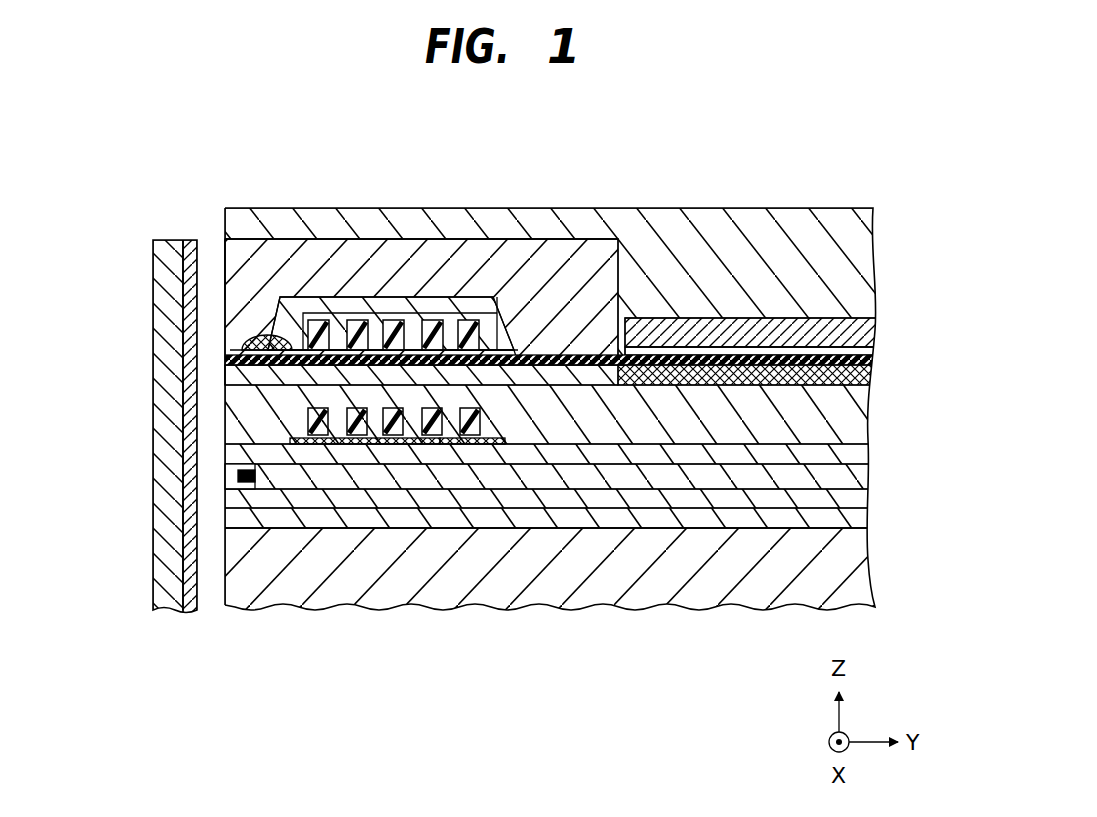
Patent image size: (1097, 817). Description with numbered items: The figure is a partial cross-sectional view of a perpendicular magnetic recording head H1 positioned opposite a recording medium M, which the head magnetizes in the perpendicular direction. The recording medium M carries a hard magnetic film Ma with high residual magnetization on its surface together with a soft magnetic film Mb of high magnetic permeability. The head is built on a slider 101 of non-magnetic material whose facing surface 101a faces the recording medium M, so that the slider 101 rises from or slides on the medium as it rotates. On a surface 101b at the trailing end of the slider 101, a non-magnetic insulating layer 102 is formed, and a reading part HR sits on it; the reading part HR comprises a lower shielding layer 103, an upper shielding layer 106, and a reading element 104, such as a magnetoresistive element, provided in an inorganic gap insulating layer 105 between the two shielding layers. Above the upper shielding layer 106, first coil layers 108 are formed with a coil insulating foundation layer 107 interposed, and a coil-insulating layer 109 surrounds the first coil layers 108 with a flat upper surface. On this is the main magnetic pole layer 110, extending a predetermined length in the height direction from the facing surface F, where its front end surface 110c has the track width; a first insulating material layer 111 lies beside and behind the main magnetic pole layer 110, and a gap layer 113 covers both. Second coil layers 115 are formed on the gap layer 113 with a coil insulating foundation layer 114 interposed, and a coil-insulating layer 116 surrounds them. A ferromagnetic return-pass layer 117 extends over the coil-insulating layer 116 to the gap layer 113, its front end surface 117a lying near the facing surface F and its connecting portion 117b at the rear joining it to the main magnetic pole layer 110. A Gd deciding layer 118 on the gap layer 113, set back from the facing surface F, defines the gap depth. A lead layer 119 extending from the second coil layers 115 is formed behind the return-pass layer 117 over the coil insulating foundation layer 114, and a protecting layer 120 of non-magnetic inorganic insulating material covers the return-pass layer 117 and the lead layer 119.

The slider 101 is at (744, 600).
The facing surface 101a is at (225, 565).
The surface on the trailing end side 101b is at (422, 530).
The non-magnetic insulating layer 102 is at (226, 518).
The lower shielding layer 103 is at (226, 498).
The reading element 104 is at (226, 476).
The inorganic insulating layer (gap insulating layer) 105 is at (658, 478).
The upper shielding layer 106 is at (226, 452).
The coil insulating foundation layer 107 is at (497, 445).
The first coil layers 108 is at (386, 445).
The coil-insulating layer 109 is at (226, 428).
The main magnetic pole layer 110 is at (226, 378).
The front end surface 110c is at (226, 368).
The first insulating material layer 111 is at (827, 350).
The gap layer 113 is at (228, 357).
The coil insulating foundation layer 114 is at (503, 318).
The second coil layers 115 is at (395, 297).
The coil-insulating layer 116 is at (303, 315).
The return-pass layer 117 is at (447, 270).
The front end surface 117a is at (225, 266).
The connecting portion 117b is at (575, 330).
The Gd deciding layer 118 is at (258, 338).
The lead layer 119 is at (703, 327).
The protecting layer 120 is at (363, 239).
The recording medium M is at (134, 450).
The hard magnetic film Ma is at (152, 608).
The soft magnetic film Mb is at (152, 580).
The facing surface F is at (222, 333).
The perpendicular magnetic recording head H1 is at (889, 207).
The reading part HR is at (889, 442).